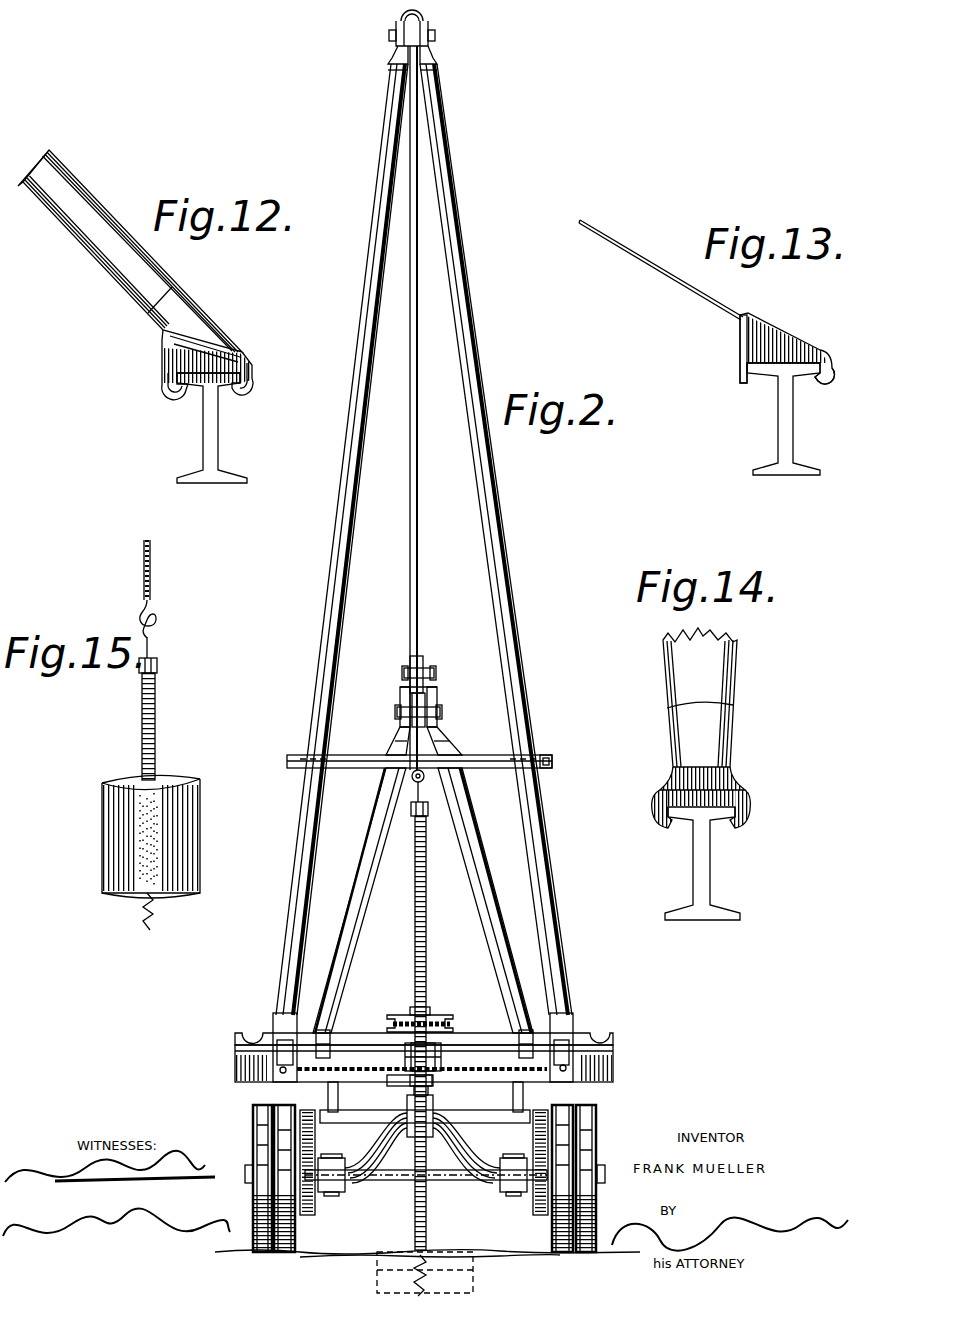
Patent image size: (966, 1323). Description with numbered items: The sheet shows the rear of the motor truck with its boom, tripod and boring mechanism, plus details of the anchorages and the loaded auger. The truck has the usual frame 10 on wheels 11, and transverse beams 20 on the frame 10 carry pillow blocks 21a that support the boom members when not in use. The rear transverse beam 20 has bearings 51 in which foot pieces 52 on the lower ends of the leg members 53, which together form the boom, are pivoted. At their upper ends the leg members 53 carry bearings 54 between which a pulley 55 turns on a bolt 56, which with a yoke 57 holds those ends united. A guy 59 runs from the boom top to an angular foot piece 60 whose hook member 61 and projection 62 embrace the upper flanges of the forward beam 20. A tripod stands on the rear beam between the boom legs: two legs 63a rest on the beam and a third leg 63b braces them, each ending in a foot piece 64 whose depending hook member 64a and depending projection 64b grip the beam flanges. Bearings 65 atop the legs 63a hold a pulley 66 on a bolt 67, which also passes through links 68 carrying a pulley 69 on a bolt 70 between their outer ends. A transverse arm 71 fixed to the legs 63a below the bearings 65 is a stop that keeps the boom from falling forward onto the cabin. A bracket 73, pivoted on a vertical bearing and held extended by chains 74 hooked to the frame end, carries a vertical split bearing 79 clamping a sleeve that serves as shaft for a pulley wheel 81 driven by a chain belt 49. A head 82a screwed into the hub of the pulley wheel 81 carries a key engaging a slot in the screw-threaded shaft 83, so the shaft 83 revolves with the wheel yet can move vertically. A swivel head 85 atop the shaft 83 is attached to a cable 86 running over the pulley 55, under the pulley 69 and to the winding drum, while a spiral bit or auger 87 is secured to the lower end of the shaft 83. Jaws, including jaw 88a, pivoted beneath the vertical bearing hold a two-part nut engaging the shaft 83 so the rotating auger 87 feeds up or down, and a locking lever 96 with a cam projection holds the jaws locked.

In FIG. 2, the frame 10 is at (515, 1095).
In FIG. 2, the wheels 11 is at (253, 1135).
In FIG. 2, the transverse beams 20 is at (235, 1075).
In FIG. 12, the transverse beams 20 is at (210, 484).
In FIG. 13, the transverse beams 20 is at (787, 477).
In FIG. 14, the transverse beams 20 is at (722, 922).
In FIG. 2, the pillow blocks 21a is at (235, 1040).
In FIG. 2, the chain belt 49 is at (390, 1022).
In FIG. 2, the bearings 51 is at (275, 1038).
In FIG. 2, the foot pieces 52 is at (280, 1015).
In FIG. 2, the leg members 53 is at (329, 571).
In FIG. 2, the bearings 54 is at (392, 68).
In FIG. 2, the pulley 55 is at (428, 26).
In FIG. 2, the bolt 56 is at (435, 40).
In FIG. 2, the yoke 57 is at (401, 15).
In FIG. 13, the guy 59 is at (648, 265).
In FIG. 13, the angular foot piece 60 is at (782, 334).
In FIG. 13, the hook member 61 is at (826, 384).
In FIG. 13, the projection 62 is at (742, 380).
In FIG. 2, the tripod legs 63a is at (372, 845).
In FIG. 14, the tripod legs 63a is at (718, 675).
In FIG. 12, the tripod leg 63b is at (98, 258).
In FIG. 2, the foot pieces 64 is at (330, 1036).
In FIG. 14, the foot pieces 64 is at (713, 752).
In FIG. 12, the hook member 64a is at (165, 392).
In FIG. 14, the hook member 64a is at (751, 810).
In FIG. 12, the projection 64b is at (255, 375).
In FIG. 14, the projection 64b is at (652, 808).
In FIG. 2, the bearings 65 is at (394, 740).
In FIG. 2, the pulley 66 is at (426, 705).
In FIG. 2, the bolt 67 is at (398, 710).
In FIG. 2, the links 68 is at (402, 690).
In FIG. 2, the pulley 69 is at (412, 660).
In FIG. 2, the bolt 70 is at (432, 668).
In FIG. 2, the transverse arm 71 is at (548, 757).
In FIG. 2, the bracket 73 is at (412, 1130).
In FIG. 2, the chains 74 is at (310, 1075).
In FIG. 2, the vertical split bearing 79 is at (405, 1050).
In FIG. 2, the pulley wheel 81 is at (454, 1019).
In FIG. 2, the head 82a is at (428, 1010).
In FIG. 2, the screw-threaded shaft 83 is at (427, 935).
In FIG. 15, the screw-threaded shaft 83 is at (142, 733).
In FIG. 2, the swivel head 85 is at (410, 812).
In FIG. 2, the cable 86 is at (418, 497).
In FIG. 15, the cable 86 is at (143, 585).
In FIG. 2, the spiral bit or auger 87 is at (380, 1271).
In FIG. 15, the spiral bit or auger 87 is at (143, 905).
In FIG. 2, the jaw 88a is at (430, 1088).
In FIG. 2, the locking lever 96 is at (400, 1086).